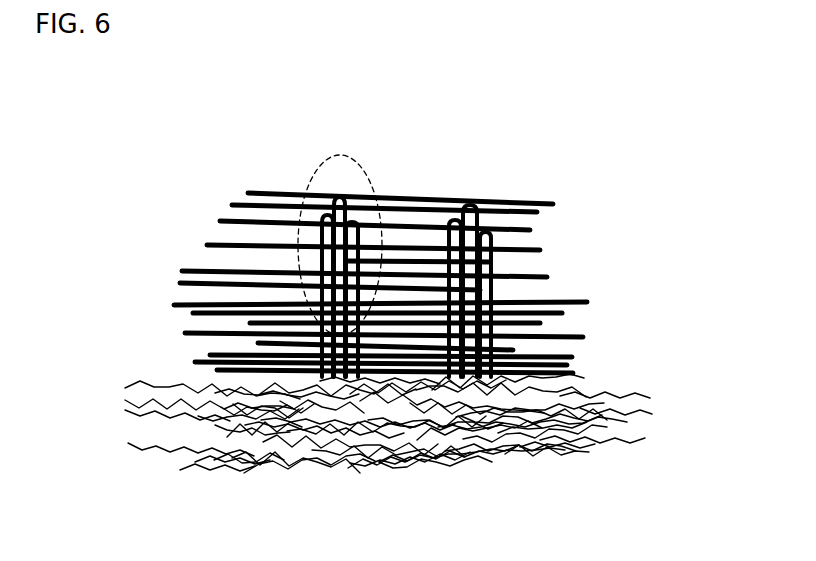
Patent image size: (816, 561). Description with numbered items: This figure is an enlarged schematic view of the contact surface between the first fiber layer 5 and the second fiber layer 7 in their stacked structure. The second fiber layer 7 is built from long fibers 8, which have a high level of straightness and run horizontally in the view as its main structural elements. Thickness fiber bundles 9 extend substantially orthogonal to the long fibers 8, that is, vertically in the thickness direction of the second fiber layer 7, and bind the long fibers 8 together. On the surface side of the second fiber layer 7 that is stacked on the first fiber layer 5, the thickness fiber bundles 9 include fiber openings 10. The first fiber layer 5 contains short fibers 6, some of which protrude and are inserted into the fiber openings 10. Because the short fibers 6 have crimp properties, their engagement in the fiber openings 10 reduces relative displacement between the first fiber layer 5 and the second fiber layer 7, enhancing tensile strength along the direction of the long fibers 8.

The first fiber layer 5 is at (658, 380).
The short fibers 6 is at (226, 462).
The second fiber layer 7 is at (645, 202).
The long fibers 8 is at (237, 200).
The thickness fiber bundles 9 is at (312, 183).
The fiber openings 10 is at (557, 446).